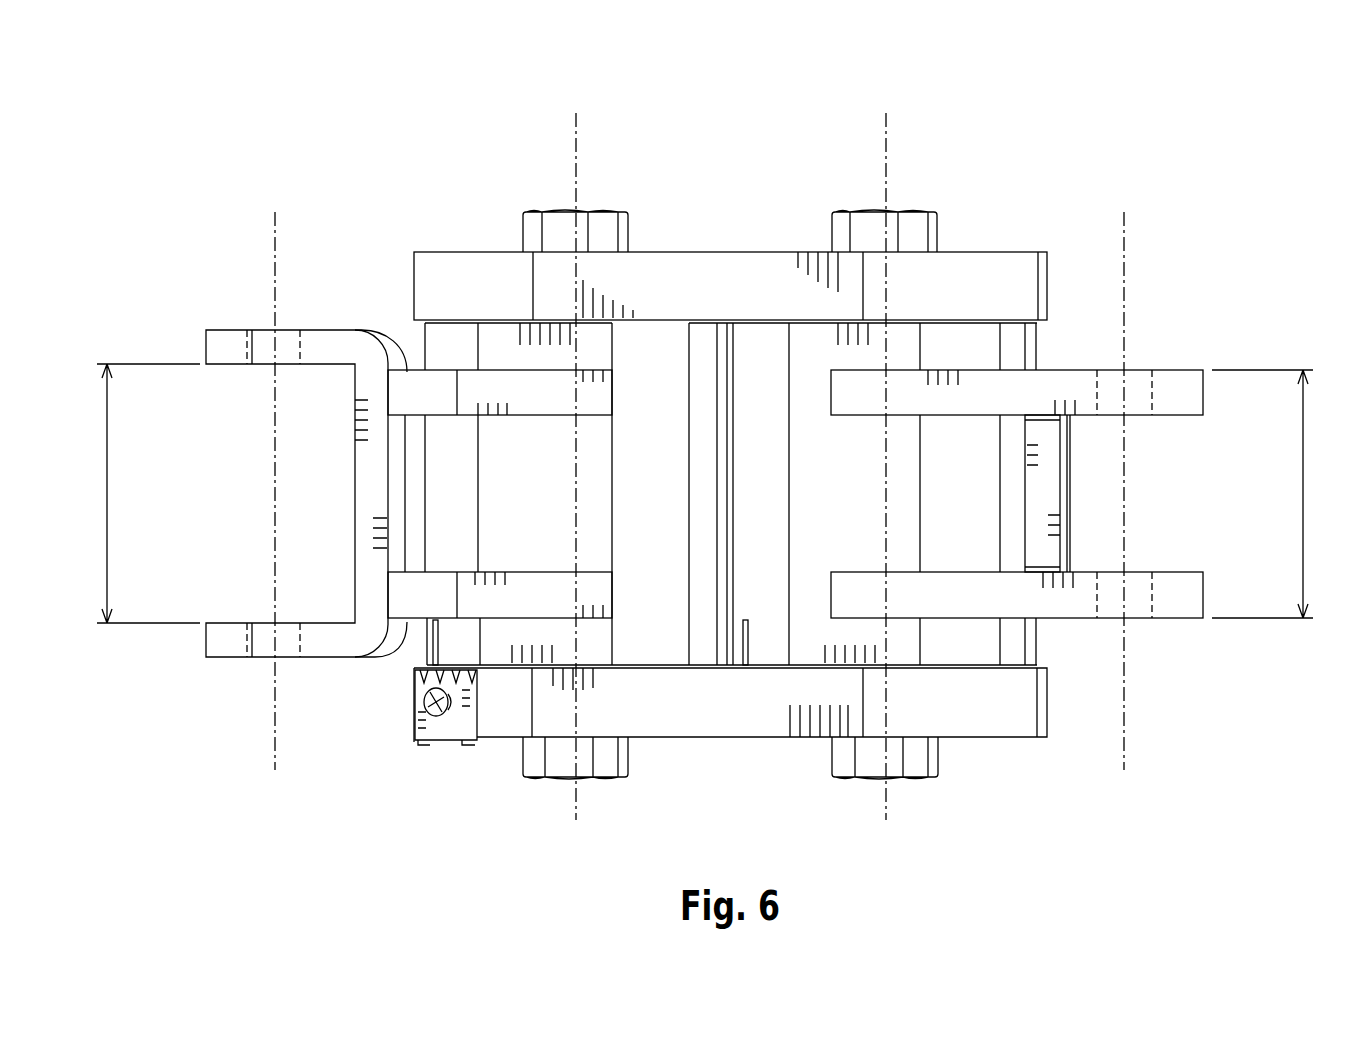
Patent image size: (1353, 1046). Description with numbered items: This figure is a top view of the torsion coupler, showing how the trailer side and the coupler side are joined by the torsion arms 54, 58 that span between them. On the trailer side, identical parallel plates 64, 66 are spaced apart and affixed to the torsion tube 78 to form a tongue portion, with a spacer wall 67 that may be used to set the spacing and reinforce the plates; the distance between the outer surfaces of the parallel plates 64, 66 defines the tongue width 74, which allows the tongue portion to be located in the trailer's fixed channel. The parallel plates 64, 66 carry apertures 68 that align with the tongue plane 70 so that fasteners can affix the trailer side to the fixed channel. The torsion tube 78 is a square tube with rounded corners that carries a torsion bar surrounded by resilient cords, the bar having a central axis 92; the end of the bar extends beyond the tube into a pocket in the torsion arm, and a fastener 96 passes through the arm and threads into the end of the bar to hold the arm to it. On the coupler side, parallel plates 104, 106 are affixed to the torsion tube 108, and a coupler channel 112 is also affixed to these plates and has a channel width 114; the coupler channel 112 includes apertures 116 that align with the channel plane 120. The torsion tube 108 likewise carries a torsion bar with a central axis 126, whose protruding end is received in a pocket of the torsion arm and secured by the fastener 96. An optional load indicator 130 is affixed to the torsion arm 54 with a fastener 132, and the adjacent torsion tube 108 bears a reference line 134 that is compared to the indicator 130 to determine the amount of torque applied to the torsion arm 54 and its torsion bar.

The torsion arm 54 is at (745, 720).
The torsion arm 58 is at (742, 304).
The parallel plate 64 is at (1180, 613).
The parallel plate 66 is at (1187, 378).
The spacer wall 67 is at (1042, 477).
The apertures 68 is at (1152, 390).
The tongue plane 70 is at (1124, 225).
The tongue width 74 is at (1265, 494).
The torsion tube 78 is at (852, 514).
The central axis 92 is at (886, 128).
The fastener 96 is at (937, 233).
The parallel plate 104 is at (523, 598).
The parallel plate 106 is at (517, 388).
The torsion tube 108 is at (672, 514).
The coupler channel 112 is at (218, 346).
The channel width 114 is at (142, 493).
The apertures 116 is at (300, 345).
The channel plane 120 is at (275, 226).
The central axis 126 is at (576, 127).
The load indicator 130 is at (457, 745).
The fastener 132 is at (431, 700).
The reference line 134 is at (437, 646).